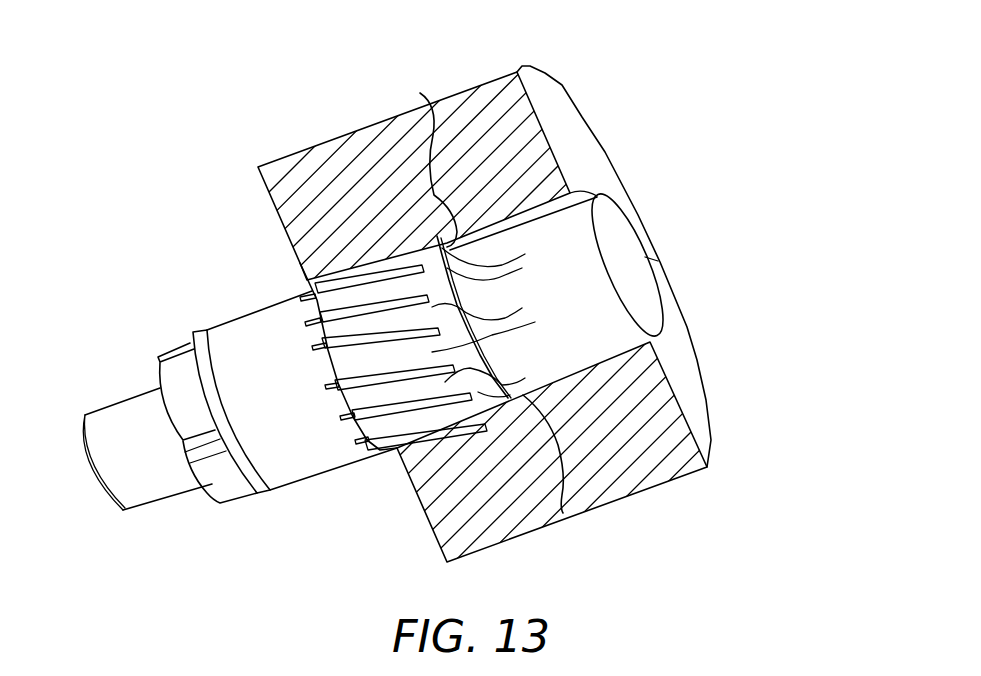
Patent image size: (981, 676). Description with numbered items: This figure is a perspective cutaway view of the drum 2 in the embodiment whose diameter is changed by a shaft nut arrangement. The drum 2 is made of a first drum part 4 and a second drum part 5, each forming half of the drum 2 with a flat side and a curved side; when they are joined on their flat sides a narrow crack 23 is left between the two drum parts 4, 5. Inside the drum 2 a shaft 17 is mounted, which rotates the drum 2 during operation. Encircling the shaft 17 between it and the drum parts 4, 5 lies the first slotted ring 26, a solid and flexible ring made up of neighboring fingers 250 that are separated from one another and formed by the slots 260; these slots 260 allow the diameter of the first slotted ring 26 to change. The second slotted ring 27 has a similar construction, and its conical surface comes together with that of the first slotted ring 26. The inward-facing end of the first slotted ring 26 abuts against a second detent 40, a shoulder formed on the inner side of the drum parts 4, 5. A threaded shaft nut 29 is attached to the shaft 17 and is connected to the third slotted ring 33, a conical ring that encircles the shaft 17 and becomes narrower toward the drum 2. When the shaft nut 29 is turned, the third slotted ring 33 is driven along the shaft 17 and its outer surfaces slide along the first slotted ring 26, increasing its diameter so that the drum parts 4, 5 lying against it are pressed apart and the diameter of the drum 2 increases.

The drum 2 is at (257, 112).
The first drum part 4 is at (578, 152).
The second drum part 5 is at (693, 387).
The shaft 17 is at (108, 412).
The crack 23 is at (660, 270).
The first slotted ring 26 is at (300, 264).
The second slotted ring 27 is at (313, 472).
The shaft nut 29 is at (160, 357).
The third slotted ring 33 is at (227, 322).
The second detent 40 is at (595, 531).
The fingers 250 is at (522, 258).
The slots 260 is at (306, 322).